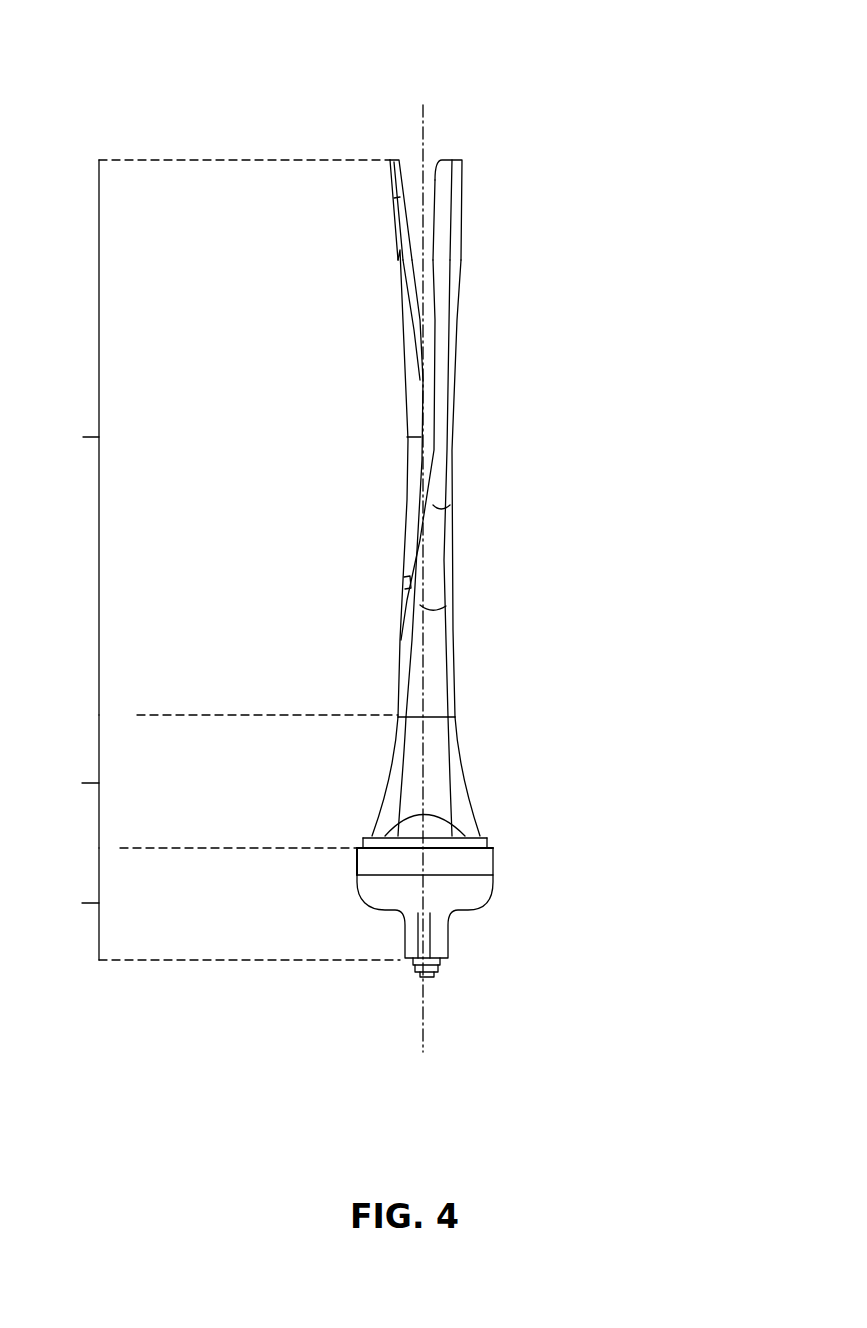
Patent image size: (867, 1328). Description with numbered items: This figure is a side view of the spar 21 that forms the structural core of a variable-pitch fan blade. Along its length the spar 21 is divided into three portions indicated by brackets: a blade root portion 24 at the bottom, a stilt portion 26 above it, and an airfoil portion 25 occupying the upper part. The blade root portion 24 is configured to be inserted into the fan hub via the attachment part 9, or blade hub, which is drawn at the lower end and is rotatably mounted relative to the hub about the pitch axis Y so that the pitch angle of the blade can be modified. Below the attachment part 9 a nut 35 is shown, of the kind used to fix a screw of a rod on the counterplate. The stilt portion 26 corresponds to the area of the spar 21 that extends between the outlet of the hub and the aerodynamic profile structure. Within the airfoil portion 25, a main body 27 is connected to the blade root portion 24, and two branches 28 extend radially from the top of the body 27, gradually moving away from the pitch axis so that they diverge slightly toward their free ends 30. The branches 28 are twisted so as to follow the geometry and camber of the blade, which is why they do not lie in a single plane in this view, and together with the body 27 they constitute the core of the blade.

The spar 21 is at (634, 116).
The free end 30 is at (391, 158).
The branch 28 is at (417, 319).
The main body 27 is at (432, 702).
The attachment part 9 is at (477, 878).
The nut 35 is at (416, 966).
The airfoil portion 25 is at (217, 437).
The stilt portion 26 is at (225, 781).
The blade root portion 24 is at (227, 904).